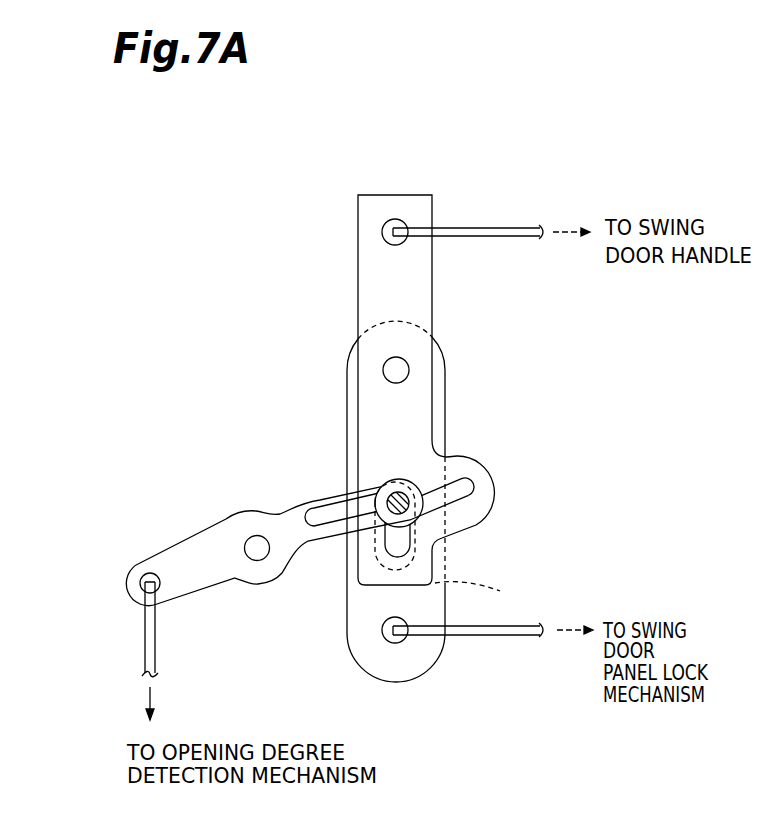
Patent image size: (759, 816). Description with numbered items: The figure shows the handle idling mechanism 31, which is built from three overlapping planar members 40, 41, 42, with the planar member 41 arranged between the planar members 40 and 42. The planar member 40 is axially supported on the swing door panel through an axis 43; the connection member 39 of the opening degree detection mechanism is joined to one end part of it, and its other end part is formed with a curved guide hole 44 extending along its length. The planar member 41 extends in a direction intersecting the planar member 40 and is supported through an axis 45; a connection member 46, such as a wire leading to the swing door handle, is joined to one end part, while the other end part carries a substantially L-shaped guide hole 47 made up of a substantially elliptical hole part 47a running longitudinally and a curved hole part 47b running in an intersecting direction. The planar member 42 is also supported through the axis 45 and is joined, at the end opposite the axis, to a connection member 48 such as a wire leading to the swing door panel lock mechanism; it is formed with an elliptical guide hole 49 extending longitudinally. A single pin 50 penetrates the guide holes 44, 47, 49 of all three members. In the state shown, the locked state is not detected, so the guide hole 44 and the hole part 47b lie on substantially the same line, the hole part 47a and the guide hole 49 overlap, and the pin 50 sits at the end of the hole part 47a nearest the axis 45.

The handle idling mechanism 31 is at (291, 216).
The connection member 39 is at (152, 633).
The planar member 40 is at (202, 553).
The planar member 41 is at (382, 289).
The planar member 42 is at (446, 400).
The axis 43 is at (257, 549).
The curved guide hole 44 is at (327, 519).
The axis 45 is at (398, 375).
The connection member 46 is at (490, 228).
The L-shaped guide hole 47 is at (589, 479).
The elliptical hole part 47a is at (394, 548).
The curved hole part 47b is at (464, 488).
The connection member 48 is at (487, 636).
The elliptical guide hole 49 is at (485, 596).
The pin 50 is at (408, 489).